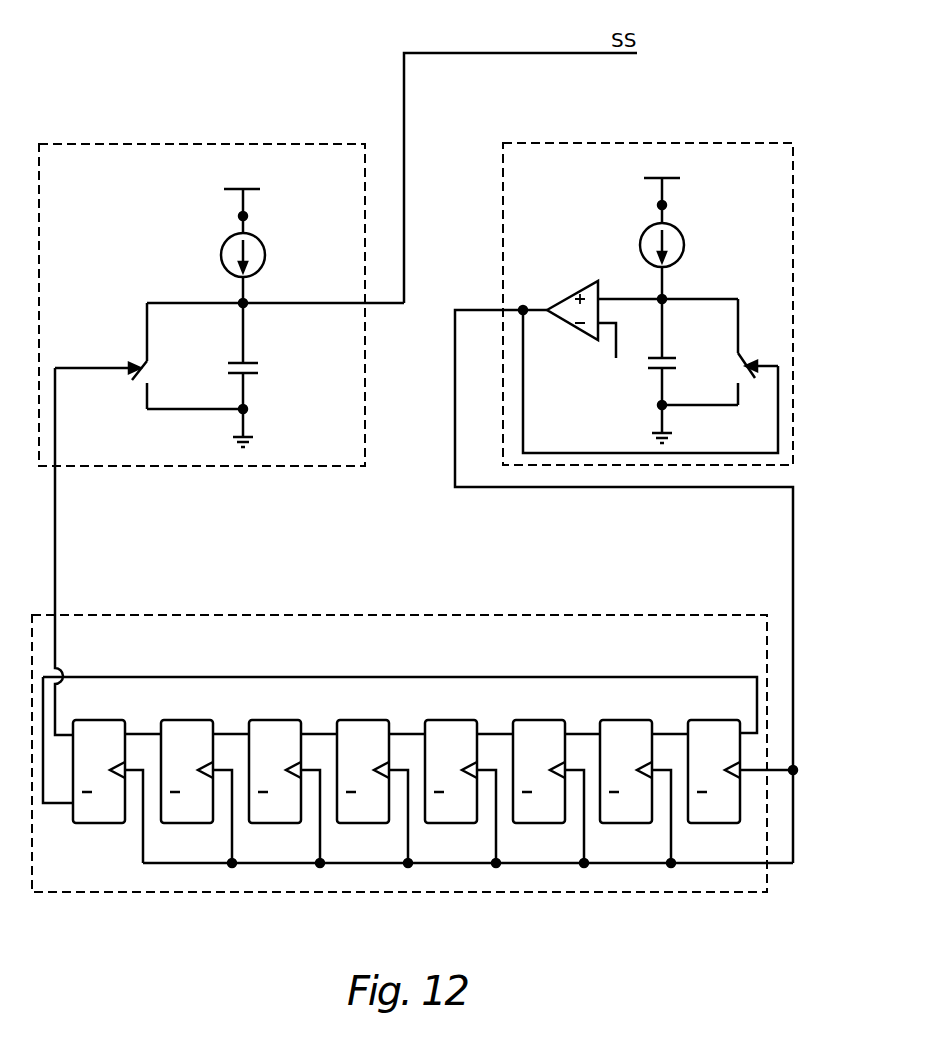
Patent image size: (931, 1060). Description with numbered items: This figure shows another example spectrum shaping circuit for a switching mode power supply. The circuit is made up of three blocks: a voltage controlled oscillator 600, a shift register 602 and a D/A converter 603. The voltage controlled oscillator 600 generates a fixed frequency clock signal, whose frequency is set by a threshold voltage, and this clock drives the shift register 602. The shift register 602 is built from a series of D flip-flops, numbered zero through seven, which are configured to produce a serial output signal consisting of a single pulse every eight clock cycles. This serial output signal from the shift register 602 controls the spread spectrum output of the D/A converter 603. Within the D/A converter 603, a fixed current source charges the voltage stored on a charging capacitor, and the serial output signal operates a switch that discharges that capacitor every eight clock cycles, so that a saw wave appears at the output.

The voltage controlled oscillator 600 is at (703, 143).
The shift register 602 is at (213, 892).
The D/A converter 603 is at (146, 144).